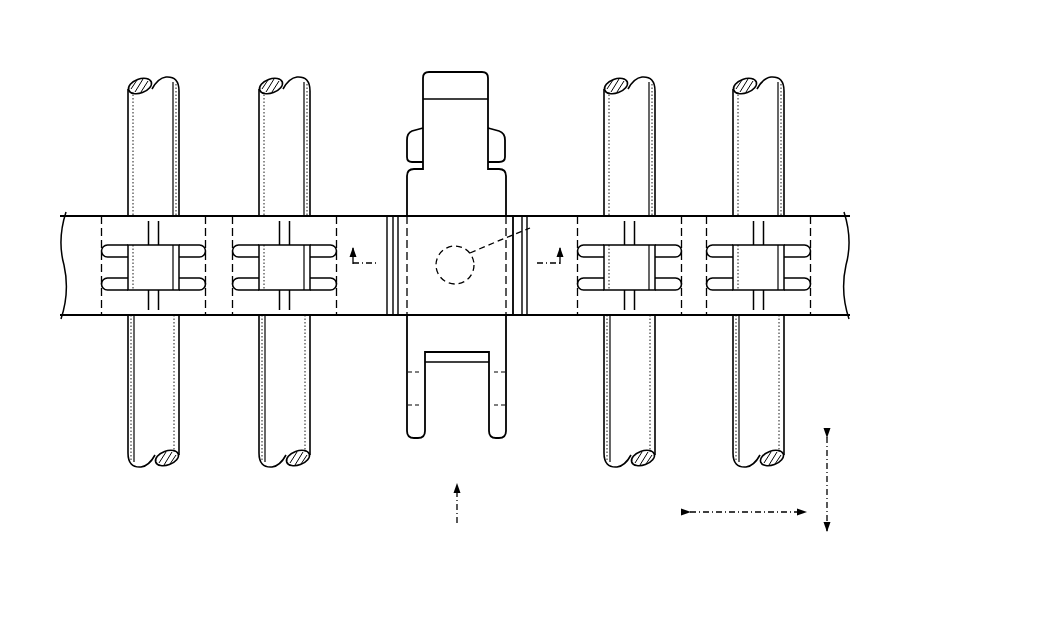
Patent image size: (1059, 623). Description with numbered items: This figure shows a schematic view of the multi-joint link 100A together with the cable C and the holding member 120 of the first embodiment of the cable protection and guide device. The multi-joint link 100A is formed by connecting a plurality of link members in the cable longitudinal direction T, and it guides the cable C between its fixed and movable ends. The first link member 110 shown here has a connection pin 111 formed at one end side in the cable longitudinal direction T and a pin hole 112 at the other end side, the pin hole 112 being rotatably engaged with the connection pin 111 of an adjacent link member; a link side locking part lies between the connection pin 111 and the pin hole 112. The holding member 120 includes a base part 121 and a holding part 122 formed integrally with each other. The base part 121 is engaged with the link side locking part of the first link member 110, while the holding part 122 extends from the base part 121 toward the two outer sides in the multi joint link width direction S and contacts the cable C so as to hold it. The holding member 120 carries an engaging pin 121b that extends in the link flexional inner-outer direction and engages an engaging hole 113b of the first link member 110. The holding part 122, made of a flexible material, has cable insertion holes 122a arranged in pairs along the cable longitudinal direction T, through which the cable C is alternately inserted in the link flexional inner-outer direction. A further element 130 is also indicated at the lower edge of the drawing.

The multi-joint link 100A is at (398, 77).
The first link member 110 is at (484, 70).
The connection pin 111 is at (496, 140).
The pin hole 112 is at (500, 402).
The engaging hole 113b is at (530, 228).
The holding member 120 is at (400, 500).
The base part 121 is at (412, 282).
The engaging pin 121b is at (441, 252).
The holding part 122 is at (217, 298).
The cable insertion holes 122a is at (243, 253).
The connecting portion 130 is at (552, 617).
The cable C is at (128, 139).
The multi joint link width direction S is at (748, 500).
The cable longitudinal direction T is at (837, 484).